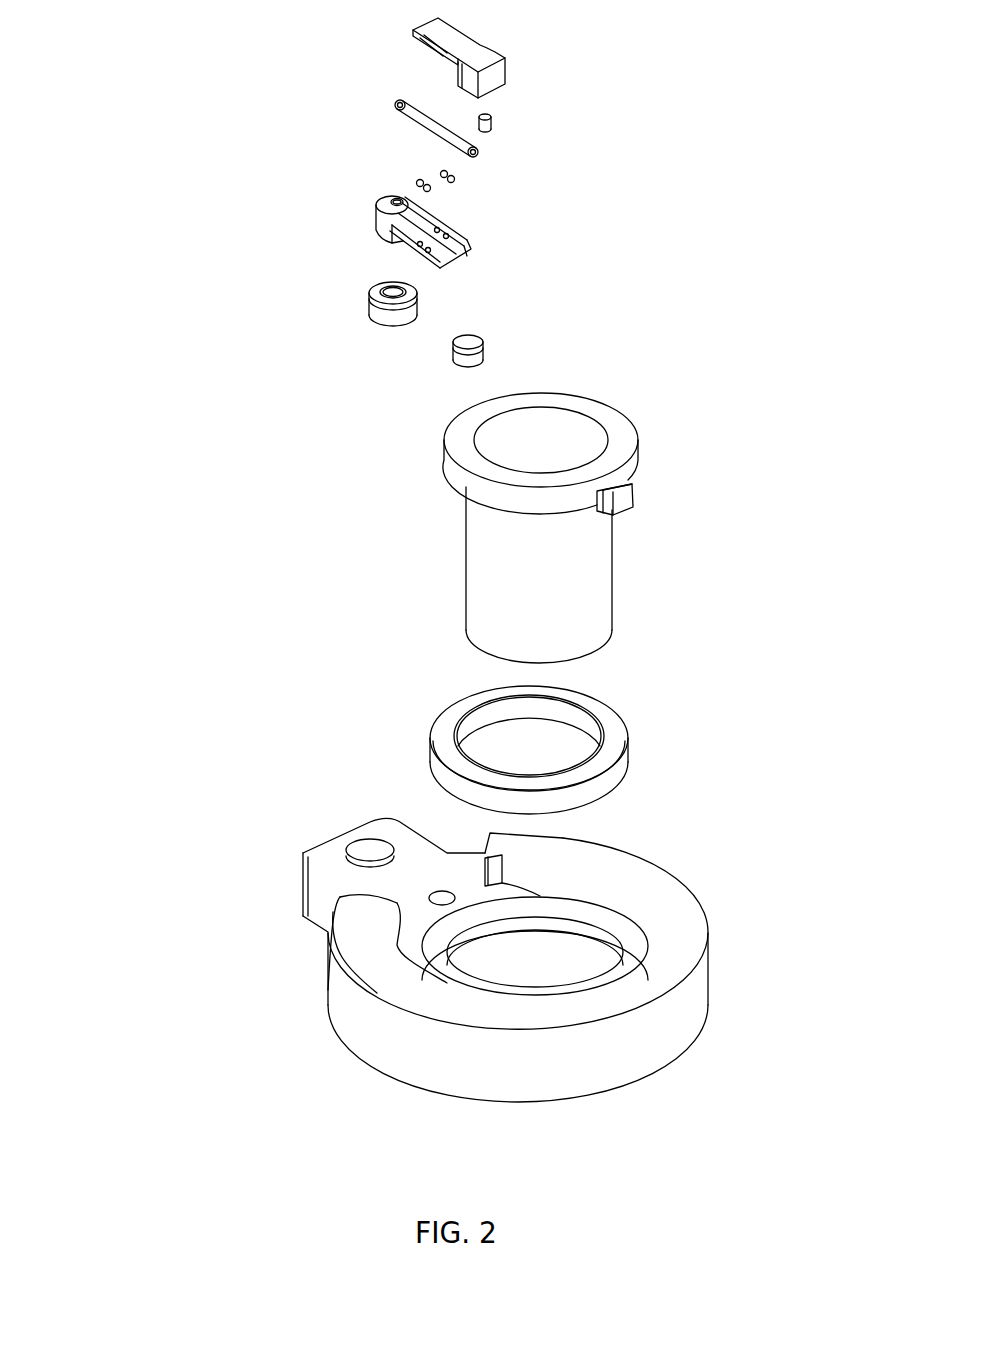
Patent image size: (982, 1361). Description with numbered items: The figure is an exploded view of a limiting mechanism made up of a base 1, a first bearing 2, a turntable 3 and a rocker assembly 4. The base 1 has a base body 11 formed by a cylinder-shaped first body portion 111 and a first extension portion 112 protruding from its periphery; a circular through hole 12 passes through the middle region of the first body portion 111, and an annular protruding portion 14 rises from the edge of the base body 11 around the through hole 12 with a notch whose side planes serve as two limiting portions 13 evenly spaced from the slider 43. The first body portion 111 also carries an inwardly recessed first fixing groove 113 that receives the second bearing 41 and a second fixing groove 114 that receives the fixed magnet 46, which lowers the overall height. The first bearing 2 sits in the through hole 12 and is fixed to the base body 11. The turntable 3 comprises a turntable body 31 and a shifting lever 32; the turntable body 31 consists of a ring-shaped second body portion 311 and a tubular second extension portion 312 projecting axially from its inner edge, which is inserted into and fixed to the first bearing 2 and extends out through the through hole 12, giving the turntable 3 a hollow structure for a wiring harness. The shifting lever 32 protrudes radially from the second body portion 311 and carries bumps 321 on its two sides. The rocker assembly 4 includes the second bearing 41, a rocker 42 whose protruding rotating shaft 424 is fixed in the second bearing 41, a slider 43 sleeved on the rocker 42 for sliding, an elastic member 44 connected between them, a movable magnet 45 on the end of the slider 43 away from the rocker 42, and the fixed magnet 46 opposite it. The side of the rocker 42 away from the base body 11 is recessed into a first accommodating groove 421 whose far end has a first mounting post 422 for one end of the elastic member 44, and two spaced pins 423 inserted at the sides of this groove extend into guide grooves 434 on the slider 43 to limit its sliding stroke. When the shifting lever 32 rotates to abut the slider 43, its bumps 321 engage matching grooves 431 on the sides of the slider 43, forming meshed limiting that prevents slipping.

The base 1 is at (124, 937).
The base body 11 is at (182, 893).
The first body portion 111 is at (412, 945).
The first extension portion 112 is at (318, 910).
The first fixing groove 113 is at (358, 846).
The second fixing groove 114 is at (428, 898).
The through hole 12 is at (468, 983).
The limiting portion 13 is at (502, 862).
The annular protruding portion 14 is at (557, 1007).
The first bearing 2 is at (450, 722).
The turntable 3 is at (284, 455).
The turntable body 31 is at (340, 415).
The second body portion 311 is at (462, 438).
The second extension portion 312 is at (487, 527).
The shifting lever 32 is at (600, 500).
The bump 321 is at (637, 487).
The rocker assembly 4 is at (622, 70).
The second bearing 41 is at (410, 312).
The rocker 42 is at (460, 250).
The first accommodating groove 421 is at (410, 222).
The first mounting post 422 is at (395, 200).
The pin 423 is at (417, 183).
The rotating shaft 424 is at (387, 242).
The slider 43 is at (500, 77).
The groove 431 is at (455, 72).
The guide groove 434 is at (410, 43).
The elastic member 44 is at (480, 157).
The movable magnet 45 is at (493, 127).
The fixed magnet 46 is at (473, 357).